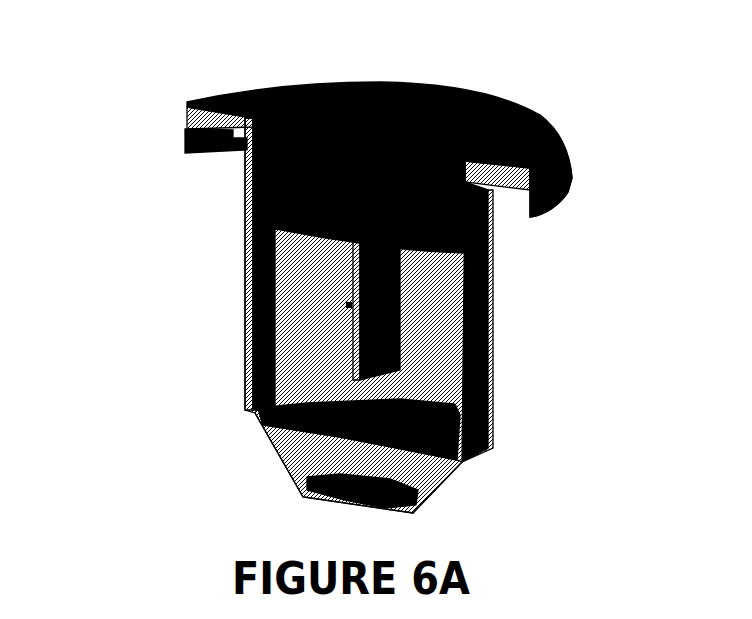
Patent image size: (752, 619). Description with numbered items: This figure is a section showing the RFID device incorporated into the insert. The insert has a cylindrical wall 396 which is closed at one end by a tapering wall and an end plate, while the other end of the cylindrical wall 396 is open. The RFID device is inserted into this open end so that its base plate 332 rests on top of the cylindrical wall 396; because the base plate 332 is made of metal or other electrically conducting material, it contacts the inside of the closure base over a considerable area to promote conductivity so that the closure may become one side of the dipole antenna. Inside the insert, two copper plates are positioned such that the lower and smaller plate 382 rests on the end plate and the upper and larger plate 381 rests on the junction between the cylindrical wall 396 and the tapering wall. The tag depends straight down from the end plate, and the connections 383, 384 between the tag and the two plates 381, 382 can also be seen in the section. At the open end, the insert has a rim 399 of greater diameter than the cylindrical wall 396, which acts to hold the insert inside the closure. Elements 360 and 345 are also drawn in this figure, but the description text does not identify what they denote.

The base plate 332 is at (235, 93).
The divider panel 360 is at (347, 306).
The cylindrical wall 396 is at (252, 326).
The rim 399 is at (542, 217).
The interior surface 345 is at (400, 327).
The connection 383 is at (395, 373).
The upper plate 381 is at (283, 405).
The lower plate 382 is at (373, 479).
The connection 384 is at (447, 483).